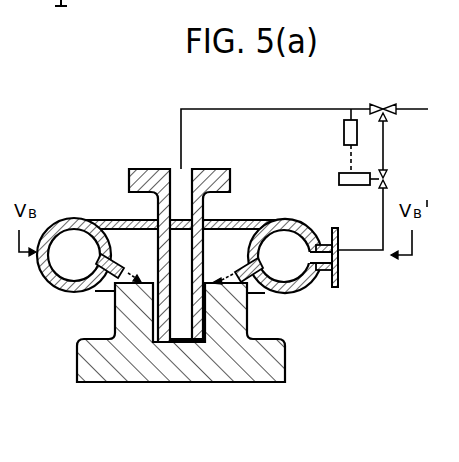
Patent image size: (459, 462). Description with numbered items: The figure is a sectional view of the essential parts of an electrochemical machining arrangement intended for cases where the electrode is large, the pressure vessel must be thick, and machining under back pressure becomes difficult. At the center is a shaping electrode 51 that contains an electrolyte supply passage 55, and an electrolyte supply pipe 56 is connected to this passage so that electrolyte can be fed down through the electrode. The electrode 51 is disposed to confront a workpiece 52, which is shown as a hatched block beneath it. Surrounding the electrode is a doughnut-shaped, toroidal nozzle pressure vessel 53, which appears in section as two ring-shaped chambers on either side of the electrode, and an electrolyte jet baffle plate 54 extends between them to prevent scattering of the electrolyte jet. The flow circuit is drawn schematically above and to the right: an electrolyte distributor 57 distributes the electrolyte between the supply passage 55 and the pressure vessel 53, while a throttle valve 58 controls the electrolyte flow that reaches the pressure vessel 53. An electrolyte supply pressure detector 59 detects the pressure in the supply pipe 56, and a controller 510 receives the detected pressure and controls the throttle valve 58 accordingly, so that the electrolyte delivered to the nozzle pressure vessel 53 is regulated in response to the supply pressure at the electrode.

The shaping electrode 51 is at (212, 172).
The workpiece 52 is at (268, 347).
The nozzle pressure vessel 53 is at (289, 218).
The electrolyte jet baffle plate 54 is at (235, 220).
The electrolyte supply passage 55 is at (170, 169).
The electrolyte supply pipe 56 is at (270, 108).
The electrolyte distributor 57 is at (390, 103).
The throttle valve 58 is at (390, 178).
The electrolyte supply pressure detector 59 is at (343, 133).
The controller 510 is at (364, 173).